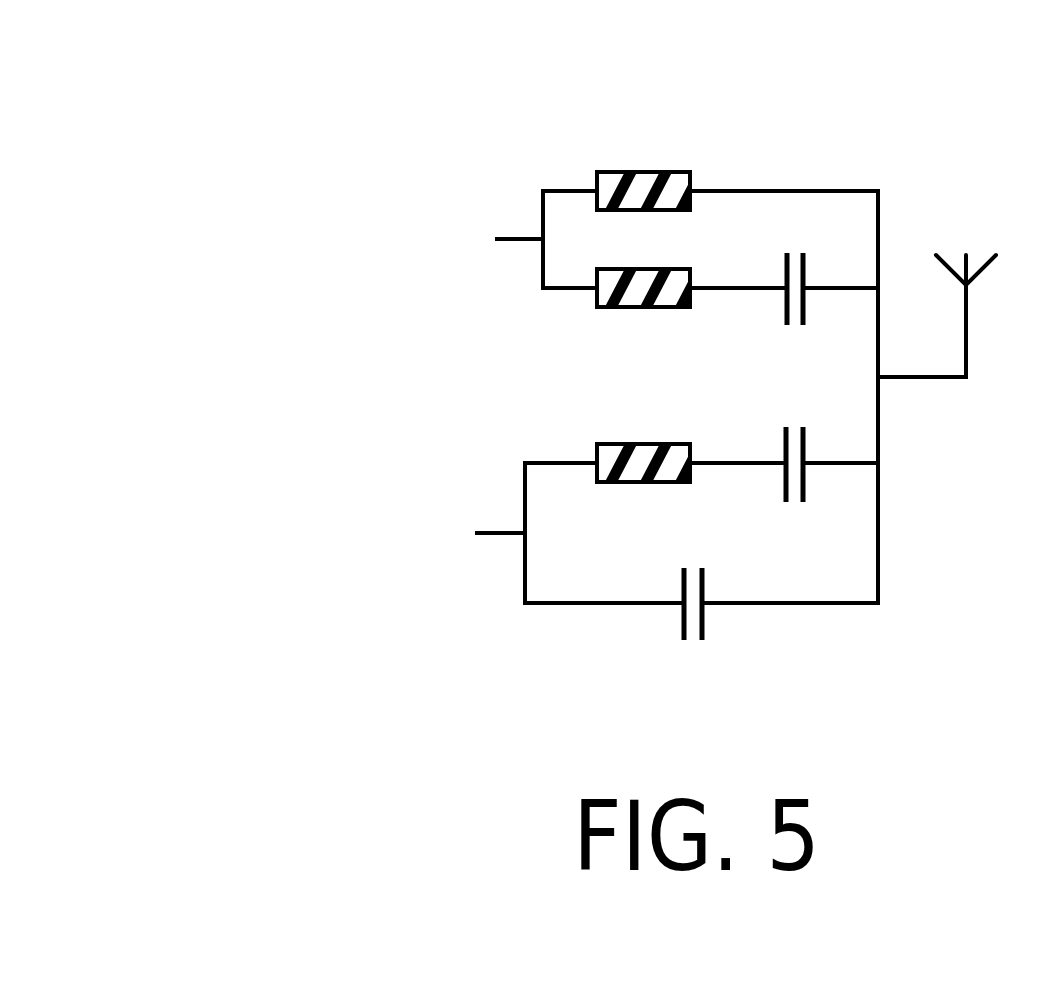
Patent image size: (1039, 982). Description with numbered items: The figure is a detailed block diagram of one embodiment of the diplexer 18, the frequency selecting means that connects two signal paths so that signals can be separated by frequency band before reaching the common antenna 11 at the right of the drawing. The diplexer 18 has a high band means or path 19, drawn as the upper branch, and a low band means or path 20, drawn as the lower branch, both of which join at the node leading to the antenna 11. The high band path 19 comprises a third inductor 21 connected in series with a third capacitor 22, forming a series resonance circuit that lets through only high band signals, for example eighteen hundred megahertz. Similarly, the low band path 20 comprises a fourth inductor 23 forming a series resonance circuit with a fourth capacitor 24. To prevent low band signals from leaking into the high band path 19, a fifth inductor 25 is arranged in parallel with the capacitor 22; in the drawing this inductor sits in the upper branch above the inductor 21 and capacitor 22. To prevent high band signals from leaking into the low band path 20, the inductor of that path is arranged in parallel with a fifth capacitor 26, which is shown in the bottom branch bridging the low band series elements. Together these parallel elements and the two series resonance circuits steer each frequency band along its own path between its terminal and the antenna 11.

The antenna 11 is at (967, 253).
The diplexer 18 is at (321, 342).
The high band path 19 is at (497, 238).
The low band path 20 is at (493, 532).
The third inductor 21 is at (602, 306).
The third capacitor 22 is at (803, 320).
The fourth inductor 23 is at (600, 446).
The fourth capacitor 24 is at (783, 450).
The fifth inductor 25 is at (665, 173).
The fifth capacitor 26 is at (702, 630).